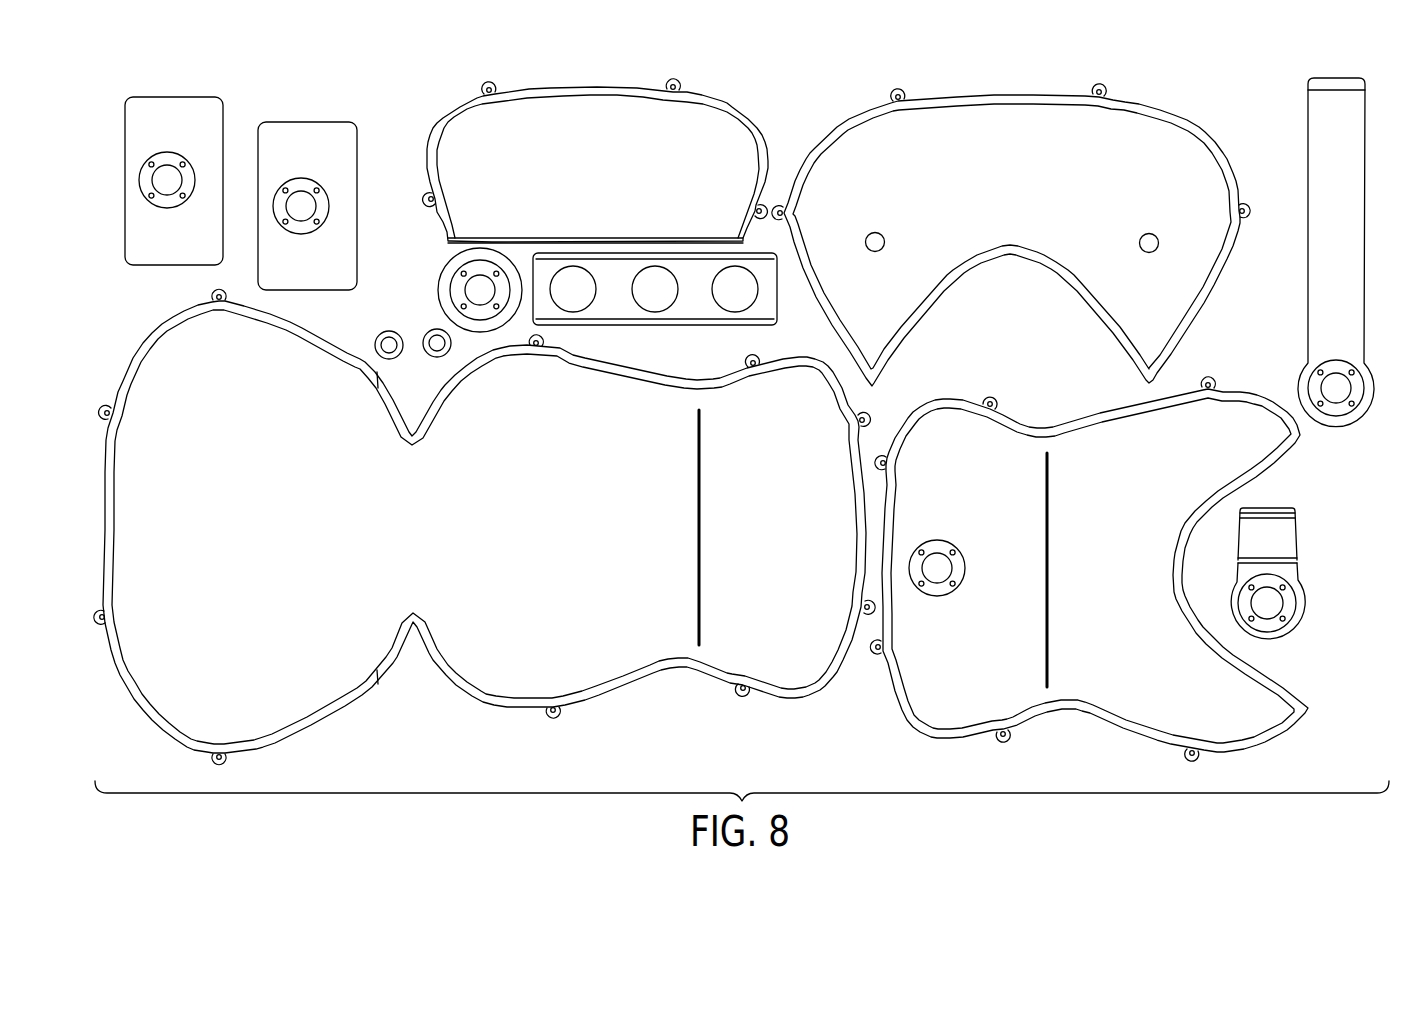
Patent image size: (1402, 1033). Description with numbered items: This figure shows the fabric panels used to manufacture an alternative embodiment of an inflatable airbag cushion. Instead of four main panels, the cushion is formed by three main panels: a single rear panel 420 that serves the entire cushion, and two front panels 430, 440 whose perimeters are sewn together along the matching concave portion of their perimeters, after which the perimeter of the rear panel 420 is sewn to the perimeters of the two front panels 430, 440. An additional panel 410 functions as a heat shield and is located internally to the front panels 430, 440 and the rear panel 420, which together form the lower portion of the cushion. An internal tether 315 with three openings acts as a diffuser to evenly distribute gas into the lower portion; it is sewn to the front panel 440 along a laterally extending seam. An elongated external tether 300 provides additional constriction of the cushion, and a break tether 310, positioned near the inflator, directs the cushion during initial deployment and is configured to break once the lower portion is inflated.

The elongated external tether 300 is at (1318, 118).
The tether 310 is at (1282, 542).
The internal tether 315 is at (690, 305).
The heat shield panel 410 is at (174, 110).
The rear panel 420 is at (618, 675).
The front panel 430 is at (1133, 133).
The front panel 440 is at (1025, 705).